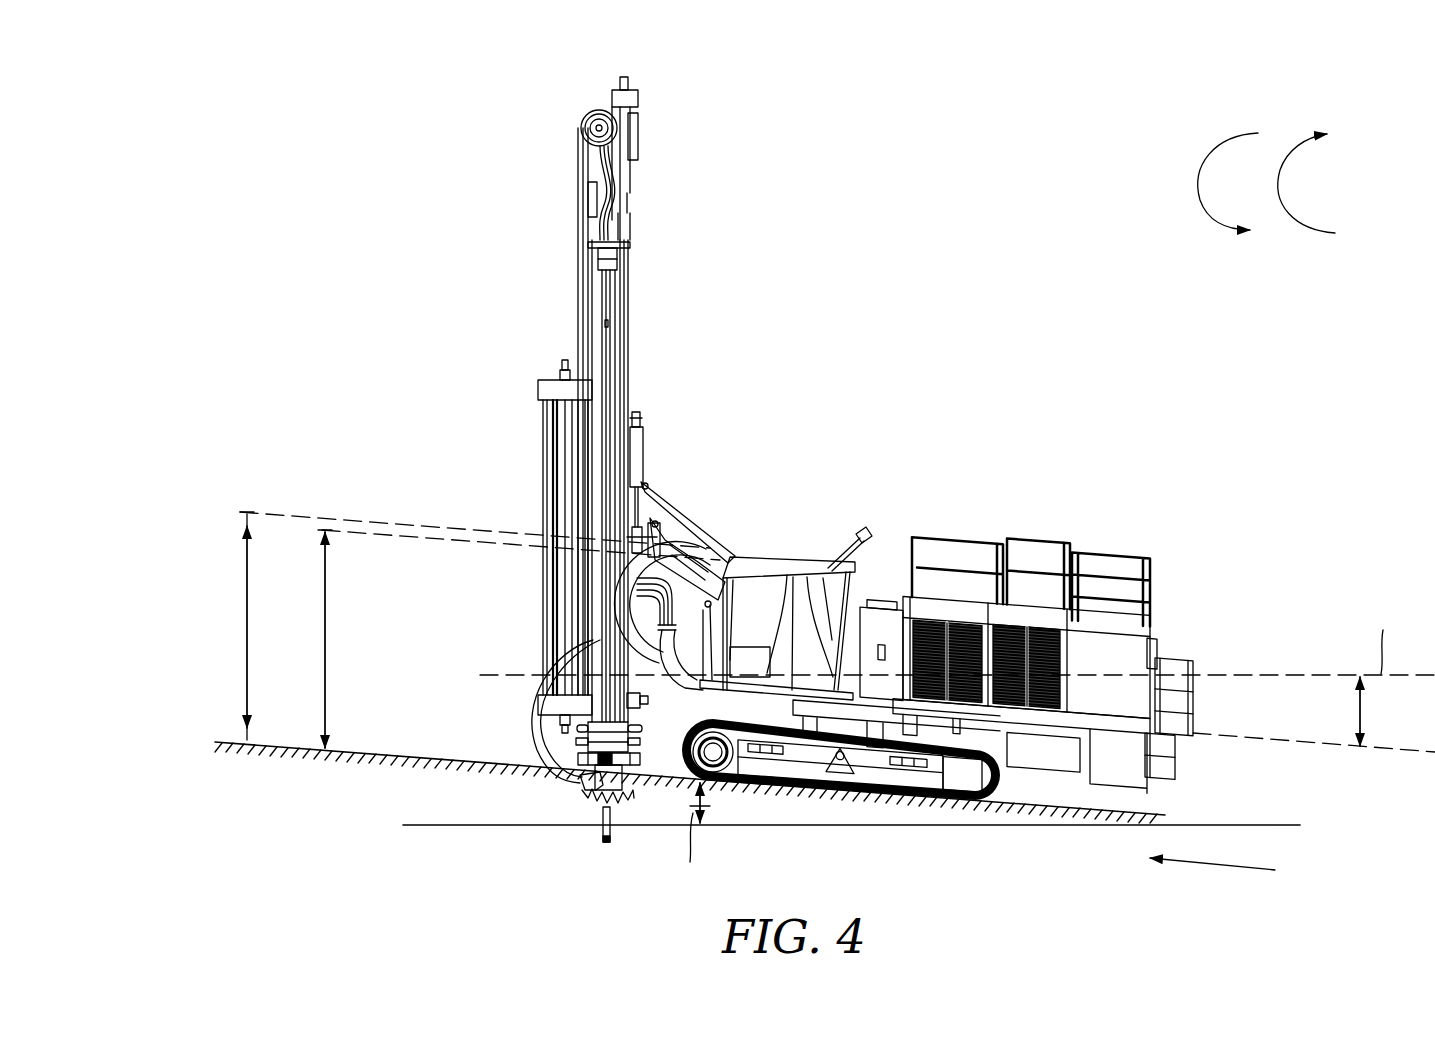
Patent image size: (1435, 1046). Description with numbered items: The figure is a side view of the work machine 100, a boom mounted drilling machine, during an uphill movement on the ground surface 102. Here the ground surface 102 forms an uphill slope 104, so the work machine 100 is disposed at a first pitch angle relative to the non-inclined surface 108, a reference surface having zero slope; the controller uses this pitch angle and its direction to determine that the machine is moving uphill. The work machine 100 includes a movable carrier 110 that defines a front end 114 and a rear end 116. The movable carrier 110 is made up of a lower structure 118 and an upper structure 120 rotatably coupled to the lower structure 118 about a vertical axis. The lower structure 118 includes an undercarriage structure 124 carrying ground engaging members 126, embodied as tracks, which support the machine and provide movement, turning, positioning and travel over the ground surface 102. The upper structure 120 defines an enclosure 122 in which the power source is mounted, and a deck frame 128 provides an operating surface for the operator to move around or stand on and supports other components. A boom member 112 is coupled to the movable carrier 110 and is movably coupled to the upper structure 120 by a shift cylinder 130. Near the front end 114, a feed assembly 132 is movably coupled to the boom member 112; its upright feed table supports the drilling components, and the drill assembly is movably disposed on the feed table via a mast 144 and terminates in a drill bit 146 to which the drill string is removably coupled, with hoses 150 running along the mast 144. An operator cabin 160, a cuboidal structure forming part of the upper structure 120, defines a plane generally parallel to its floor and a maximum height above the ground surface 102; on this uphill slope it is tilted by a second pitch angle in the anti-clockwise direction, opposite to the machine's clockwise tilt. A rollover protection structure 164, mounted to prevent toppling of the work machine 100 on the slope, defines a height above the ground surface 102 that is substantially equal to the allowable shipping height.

The work machine 100 is at (228, 88).
The ground surface 102 is at (1168, 800).
The uphill slope 104 is at (1133, 668).
The non-inclined surface 108 is at (742, 812).
The movable carrier 110 is at (1135, 540).
The boom member 112 is at (682, 543).
The front end 114 is at (655, 745).
The rear end 116 is at (1210, 703).
The lower structure 118 is at (673, 758).
The upper structure 120 is at (1038, 520).
The enclosure 122 is at (1063, 813).
The undercarriage structure 124 is at (1008, 790).
The ground engaging member 126 is at (1077, 728).
The deck frame 128 is at (1112, 720).
The shift cylinder 130 is at (720, 548).
The feed assembly 132 is at (535, 385).
The mast 144 is at (648, 318).
The drill bit 146 is at (598, 838).
The hoses 150 is at (585, 200).
The operator cabin 160 is at (780, 567).
The rollover protection structure 164 is at (833, 567).